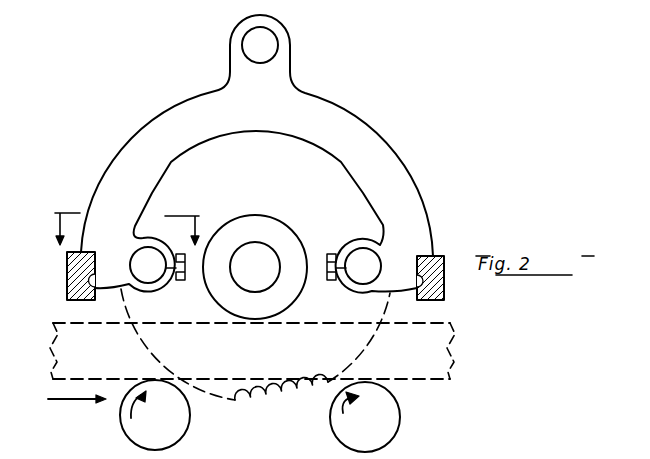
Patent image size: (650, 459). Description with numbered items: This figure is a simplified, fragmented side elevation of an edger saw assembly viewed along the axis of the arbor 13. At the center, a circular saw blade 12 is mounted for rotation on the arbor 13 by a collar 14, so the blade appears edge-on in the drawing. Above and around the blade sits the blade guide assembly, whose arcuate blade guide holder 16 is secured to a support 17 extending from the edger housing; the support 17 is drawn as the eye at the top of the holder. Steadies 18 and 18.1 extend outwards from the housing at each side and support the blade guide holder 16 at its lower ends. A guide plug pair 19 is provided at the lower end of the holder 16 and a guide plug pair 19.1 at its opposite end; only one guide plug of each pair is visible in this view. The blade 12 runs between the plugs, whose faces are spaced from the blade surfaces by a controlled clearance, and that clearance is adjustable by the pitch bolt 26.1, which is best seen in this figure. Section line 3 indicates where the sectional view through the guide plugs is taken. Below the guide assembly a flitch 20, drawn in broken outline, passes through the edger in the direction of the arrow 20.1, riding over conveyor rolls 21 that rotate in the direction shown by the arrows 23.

The section line 3- 3 is at (124, 217).
The circular saw blade 12 is at (290, 166).
The arbor 13 is at (266, 278).
The collar 14 is at (256, 221).
The blade guide holder 16 is at (394, 88).
The support 17 is at (243, 44).
The steady 18 is at (444, 290).
The steady 18.1 is at (68, 272).
The guide plug pair 19 is at (147, 276).
The guide plug pair 19.1 is at (362, 262).
The flitch 20 is at (410, 372).
The arrow 20.1 is at (44, 395).
The conveyor roll 21 is at (170, 418).
The arrow 23 is at (359, 412).
The pitch bolt 26.1 is at (179, 284).